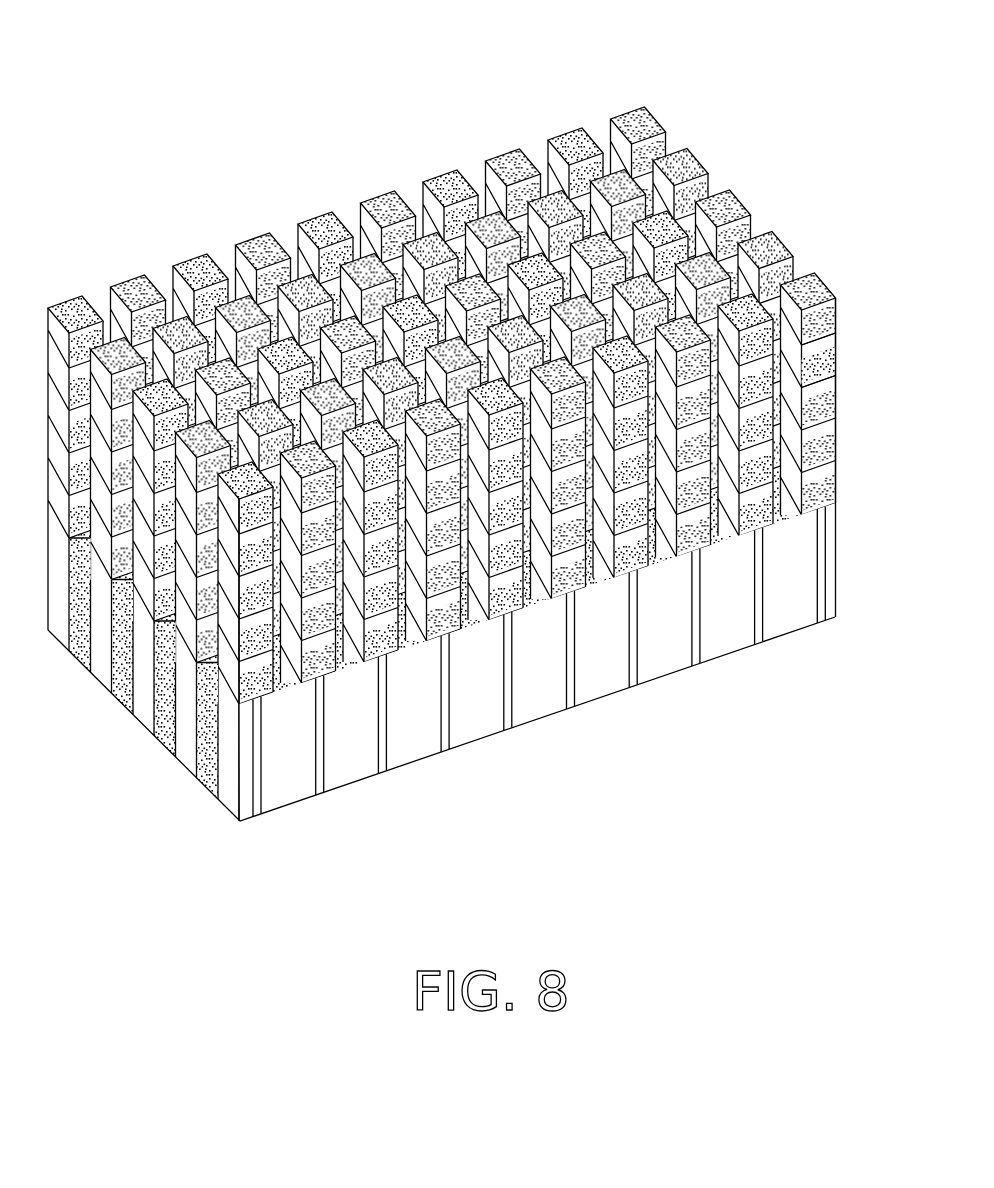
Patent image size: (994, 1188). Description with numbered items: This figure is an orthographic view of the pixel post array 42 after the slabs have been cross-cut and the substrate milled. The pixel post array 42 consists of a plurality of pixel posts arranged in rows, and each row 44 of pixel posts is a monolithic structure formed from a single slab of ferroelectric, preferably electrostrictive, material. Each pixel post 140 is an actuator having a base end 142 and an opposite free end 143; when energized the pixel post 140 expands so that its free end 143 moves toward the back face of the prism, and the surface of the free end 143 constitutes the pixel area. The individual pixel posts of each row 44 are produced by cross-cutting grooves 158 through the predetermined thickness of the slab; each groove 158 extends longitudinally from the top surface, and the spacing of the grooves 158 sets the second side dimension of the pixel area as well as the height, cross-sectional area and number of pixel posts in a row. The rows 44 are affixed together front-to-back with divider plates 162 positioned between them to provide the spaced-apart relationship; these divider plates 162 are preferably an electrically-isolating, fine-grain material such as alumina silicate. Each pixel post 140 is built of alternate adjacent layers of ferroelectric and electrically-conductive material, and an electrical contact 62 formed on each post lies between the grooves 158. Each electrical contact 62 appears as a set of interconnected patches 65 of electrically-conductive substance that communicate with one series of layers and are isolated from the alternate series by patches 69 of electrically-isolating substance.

The pixel post array 42 is at (473, 459).
The row of pixel posts 44 is at (233, 797).
The electrical contact 62 is at (834, 506).
The interconnected patches of electrically-conductive substance 65 is at (822, 340).
The patches of electrically-isolating substance 69 is at (836, 364).
The pixel post 140 is at (665, 135).
The base end 142 is at (800, 632).
The free end 143 is at (805, 282).
The groove 158 is at (94, 289).
The divider plate 162 is at (204, 784).